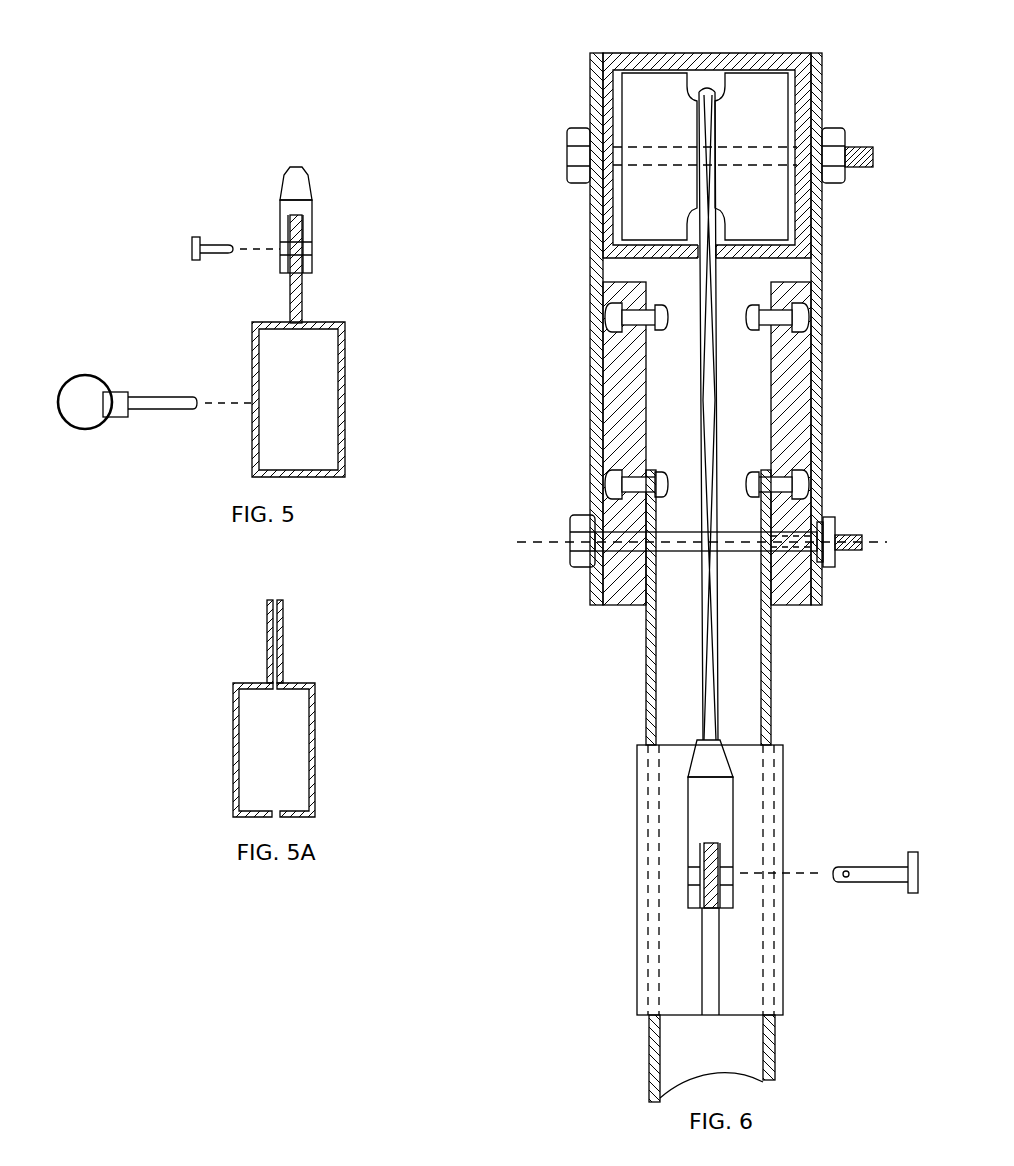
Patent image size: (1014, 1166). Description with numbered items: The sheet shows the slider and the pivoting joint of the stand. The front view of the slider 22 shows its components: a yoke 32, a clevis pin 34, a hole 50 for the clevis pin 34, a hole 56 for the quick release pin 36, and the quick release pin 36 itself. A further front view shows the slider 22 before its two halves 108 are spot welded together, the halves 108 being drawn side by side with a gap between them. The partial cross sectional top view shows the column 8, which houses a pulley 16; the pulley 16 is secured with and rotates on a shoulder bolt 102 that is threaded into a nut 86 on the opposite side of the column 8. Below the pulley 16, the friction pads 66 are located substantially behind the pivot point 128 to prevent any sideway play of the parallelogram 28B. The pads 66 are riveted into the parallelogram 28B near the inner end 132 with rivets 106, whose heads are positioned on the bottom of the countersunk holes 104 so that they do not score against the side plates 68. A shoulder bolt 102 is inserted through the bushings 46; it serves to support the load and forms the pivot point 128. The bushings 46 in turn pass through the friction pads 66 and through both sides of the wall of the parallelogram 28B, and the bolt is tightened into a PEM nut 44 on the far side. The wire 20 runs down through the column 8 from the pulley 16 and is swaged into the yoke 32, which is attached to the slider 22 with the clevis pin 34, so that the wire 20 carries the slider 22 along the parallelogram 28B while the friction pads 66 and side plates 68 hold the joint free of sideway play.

In FIG. 6, the column 8 is at (657, 60).
In FIG. 6, the pulley 16 is at (655, 193).
In FIG. 6, the wire 20 is at (713, 650).
In FIG. 5, the slider 22 is at (205, 463).
In FIG. 6, the slider 22 is at (637, 818).
In FIG. 6, the parallelogram 28B is at (727, 1035).
In FIG. 5, the yoke 32 is at (300, 187).
In FIG. 6, the yoke 32 is at (715, 797).
In FIG. 5, the clevis pin 34 is at (186, 250).
In FIG. 6, the clevis pin 34 is at (870, 872).
In FIG. 5, the quick release pin 36 is at (174, 401).
In FIG. 6, the PEM nut 44 is at (833, 544).
In FIG. 6, the bushing 46 is at (797, 549).
In FIG. 5, the hole 50 is at (313, 251).
In FIG. 5, the hole 56 is at (346, 405).
In FIG. 6, the friction pad 66 is at (618, 440).
In FIG. 6, the side plate 68 is at (590, 85).
In FIG. 6, the nut 86 is at (838, 134).
In FIG. 6, the shoulder bolt 102 is at (578, 158).
In FIG. 6, the countersunk hole 104 is at (805, 480).
In FIG. 6, the rivet 106 is at (764, 318).
In FIG. 5A, the half 108 is at (316, 757).
In FIG. 6, the pivot point 128 is at (520, 542).
In FIG. 6, the inner end 132 is at (838, 431).